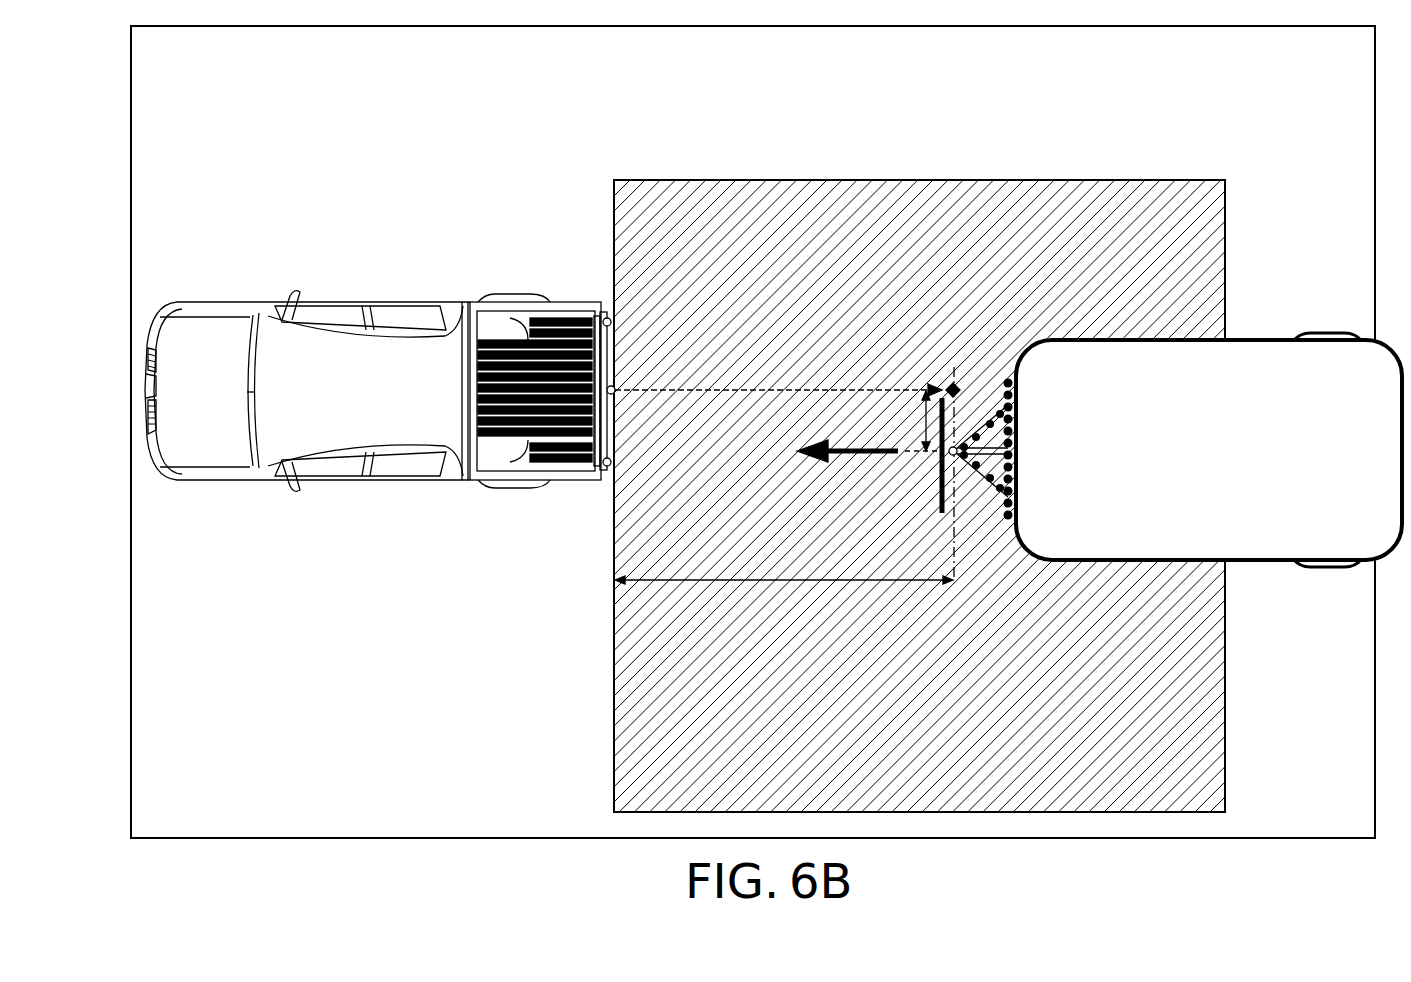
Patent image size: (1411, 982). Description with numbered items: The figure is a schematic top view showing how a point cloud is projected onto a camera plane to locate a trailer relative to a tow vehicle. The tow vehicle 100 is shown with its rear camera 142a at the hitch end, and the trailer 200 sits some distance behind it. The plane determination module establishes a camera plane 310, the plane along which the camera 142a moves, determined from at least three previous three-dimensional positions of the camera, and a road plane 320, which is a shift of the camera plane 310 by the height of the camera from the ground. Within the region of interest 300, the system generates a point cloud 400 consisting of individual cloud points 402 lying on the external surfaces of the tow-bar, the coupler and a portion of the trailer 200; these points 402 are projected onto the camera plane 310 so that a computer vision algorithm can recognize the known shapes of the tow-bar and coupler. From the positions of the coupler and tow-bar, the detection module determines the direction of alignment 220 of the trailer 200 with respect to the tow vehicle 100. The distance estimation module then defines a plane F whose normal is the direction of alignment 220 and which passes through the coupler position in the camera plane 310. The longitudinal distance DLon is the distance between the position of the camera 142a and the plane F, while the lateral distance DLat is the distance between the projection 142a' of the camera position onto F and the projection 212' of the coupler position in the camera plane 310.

The tow vehicle 100 is at (372, 402).
The camera 142a is at (783, 346).
The projection of the camera position 142a' is at (908, 367).
The trailer 200 is at (1244, 446).
The projection of the coupler position 212' is at (977, 360).
The direction of alignment 220 is at (838, 460).
The region of interest (ROI) 300 is at (940, 497).
The camera plane 310 is at (752, 220).
The road plane 320 is at (503, 74).
The point cloud 400 is at (1059, 449).
The cloud points 402 is at (1018, 383).
The plane F is at (958, 490).
The lateral distance DLat is at (901, 421).
The longitudinal distance DLon is at (784, 581).